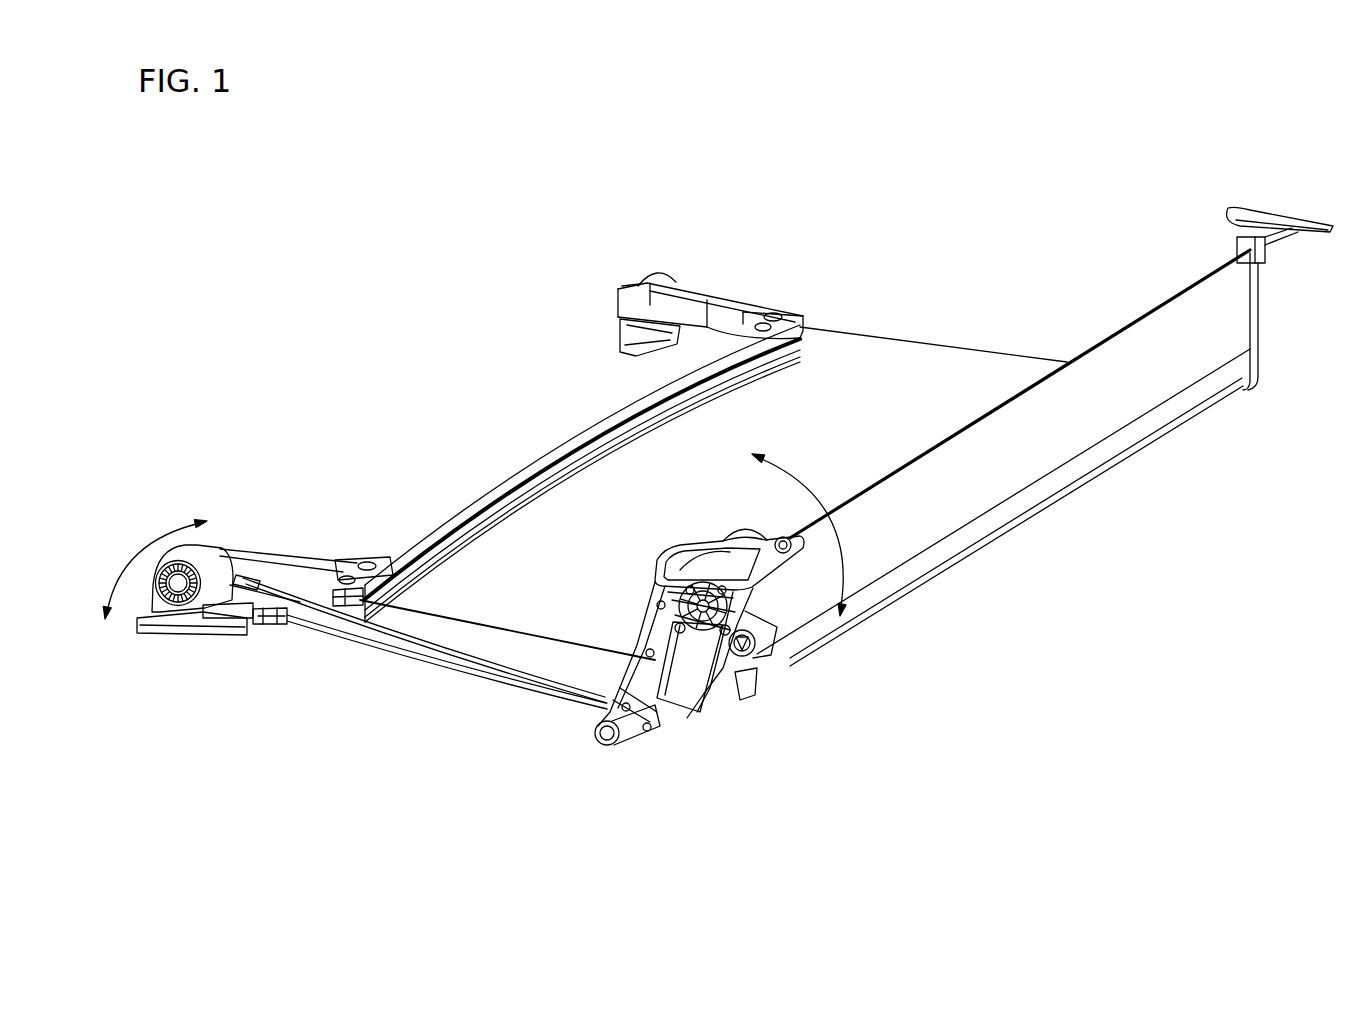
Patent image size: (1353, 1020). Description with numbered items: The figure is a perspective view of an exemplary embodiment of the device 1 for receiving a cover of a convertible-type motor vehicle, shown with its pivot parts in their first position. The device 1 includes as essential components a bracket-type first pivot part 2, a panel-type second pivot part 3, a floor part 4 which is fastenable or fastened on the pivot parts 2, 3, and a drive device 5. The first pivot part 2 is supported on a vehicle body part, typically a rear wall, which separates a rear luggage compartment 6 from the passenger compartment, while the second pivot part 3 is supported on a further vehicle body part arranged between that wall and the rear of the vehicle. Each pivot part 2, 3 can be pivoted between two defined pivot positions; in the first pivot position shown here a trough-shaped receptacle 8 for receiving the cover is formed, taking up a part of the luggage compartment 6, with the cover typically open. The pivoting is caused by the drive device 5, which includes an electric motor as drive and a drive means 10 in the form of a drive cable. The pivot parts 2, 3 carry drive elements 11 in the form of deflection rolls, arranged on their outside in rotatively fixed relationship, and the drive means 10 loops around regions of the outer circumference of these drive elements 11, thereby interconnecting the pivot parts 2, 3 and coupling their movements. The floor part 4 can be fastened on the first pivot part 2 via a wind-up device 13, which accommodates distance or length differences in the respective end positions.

The device 1 is at (1092, 668).
The first pivot part 2 is at (300, 596).
The second pivot part 3 is at (1103, 412).
The floor part 4 is at (969, 369).
The drive device 5 is at (724, 742).
The rear luggage compartment 6 is at (886, 758).
The receptacle 8 is at (473, 605).
The drive means 10 is at (487, 678).
The drive elements 11 is at (182, 585).
The wind-up device 13 is at (612, 406).